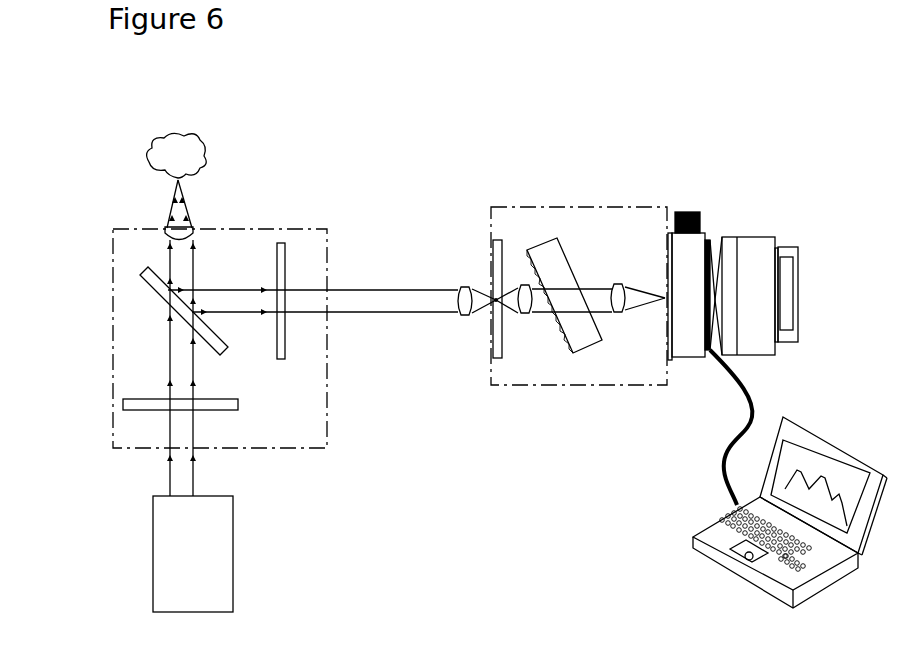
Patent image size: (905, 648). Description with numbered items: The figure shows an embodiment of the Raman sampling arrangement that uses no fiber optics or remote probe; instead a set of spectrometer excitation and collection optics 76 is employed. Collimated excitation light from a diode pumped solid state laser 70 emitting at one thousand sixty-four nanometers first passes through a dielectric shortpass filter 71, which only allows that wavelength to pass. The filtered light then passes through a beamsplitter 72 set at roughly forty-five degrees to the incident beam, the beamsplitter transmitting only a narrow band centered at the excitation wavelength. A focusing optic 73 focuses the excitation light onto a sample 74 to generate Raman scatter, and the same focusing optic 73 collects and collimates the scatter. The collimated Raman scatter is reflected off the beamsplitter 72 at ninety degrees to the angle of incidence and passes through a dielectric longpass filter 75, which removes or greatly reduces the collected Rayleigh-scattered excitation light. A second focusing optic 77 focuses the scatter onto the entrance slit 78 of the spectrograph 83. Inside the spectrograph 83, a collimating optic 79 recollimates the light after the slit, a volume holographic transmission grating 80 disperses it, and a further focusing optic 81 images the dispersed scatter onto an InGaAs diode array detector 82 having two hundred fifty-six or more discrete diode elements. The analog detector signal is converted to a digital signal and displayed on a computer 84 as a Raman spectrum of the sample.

The diode pumped solid state (DPSS) laser 70 is at (233, 577).
The dielectric shortpass filter 71 is at (222, 410).
The beamsplitter 72 is at (143, 280).
The focusing optic 73 is at (164, 232).
The sample 74 is at (148, 160).
The dielectric longpass filter 75 is at (285, 243).
The spectrometer excitation and collection optics 76 is at (327, 427).
The focusing optic 77 is at (465, 287).
The entrance slit to spectrograph 78 is at (491, 355).
The collimating optic 79 is at (527, 313).
The volume holographic transmission grating 80 is at (572, 348).
The focusing optic 81 is at (623, 313).
The InGaAs diode array detector 82 is at (688, 357).
The spectrograph 83 is at (548, 222).
The computer 84 is at (710, 563).